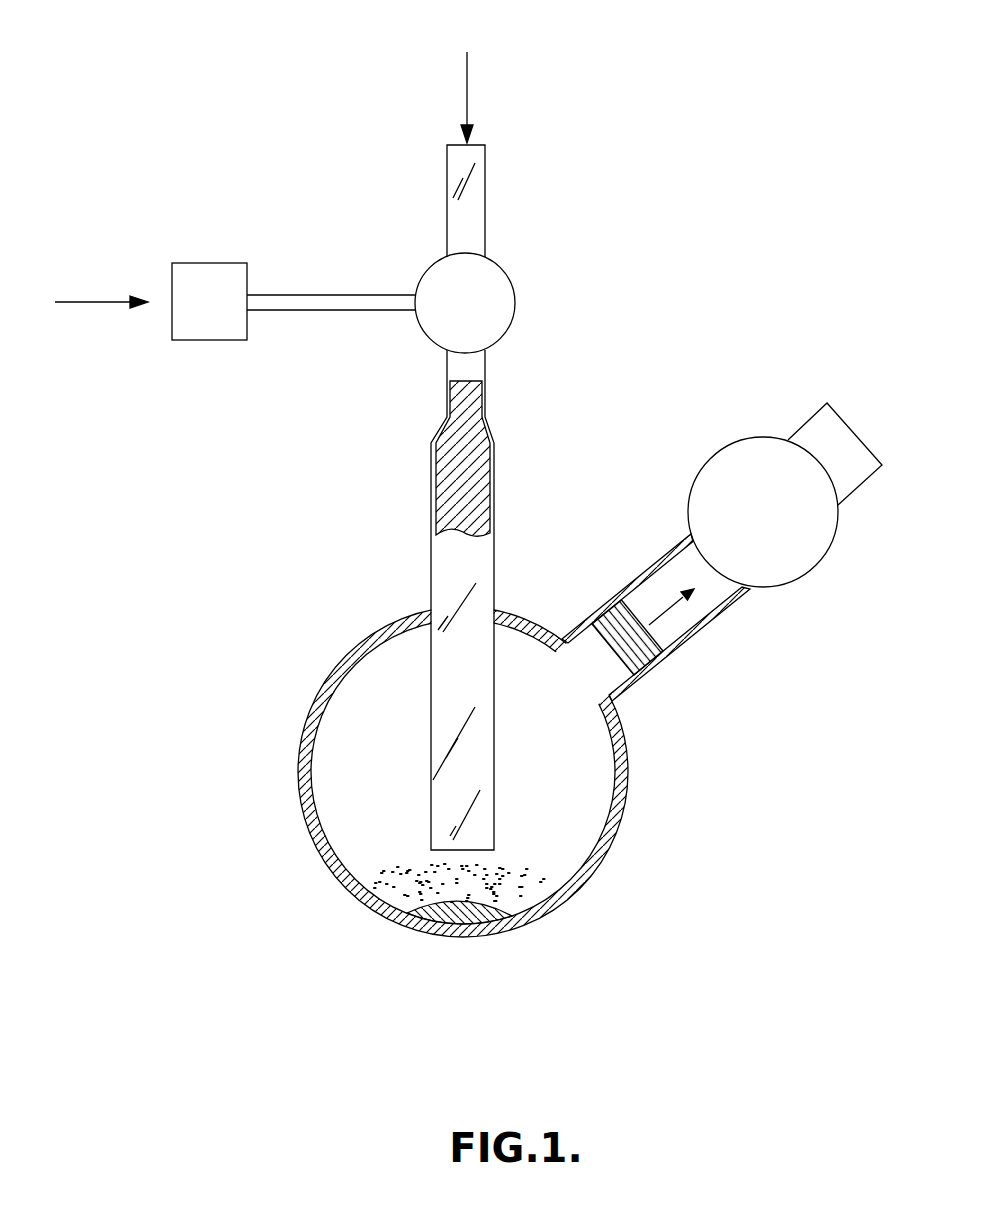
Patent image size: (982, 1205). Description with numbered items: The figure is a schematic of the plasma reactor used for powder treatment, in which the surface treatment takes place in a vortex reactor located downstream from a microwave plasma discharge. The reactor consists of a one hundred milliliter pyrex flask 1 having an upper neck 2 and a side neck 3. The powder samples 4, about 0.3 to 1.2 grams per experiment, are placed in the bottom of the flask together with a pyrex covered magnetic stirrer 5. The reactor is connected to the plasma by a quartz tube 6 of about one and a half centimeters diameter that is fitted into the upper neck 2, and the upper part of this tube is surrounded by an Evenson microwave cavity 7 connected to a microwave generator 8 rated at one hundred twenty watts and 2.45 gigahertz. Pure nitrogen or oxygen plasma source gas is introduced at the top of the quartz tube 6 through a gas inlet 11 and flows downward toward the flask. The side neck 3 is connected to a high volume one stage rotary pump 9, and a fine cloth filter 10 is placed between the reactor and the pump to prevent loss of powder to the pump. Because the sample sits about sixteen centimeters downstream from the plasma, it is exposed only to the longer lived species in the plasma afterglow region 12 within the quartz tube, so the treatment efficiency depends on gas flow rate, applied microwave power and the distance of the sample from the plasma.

The pyrex flask 1 is at (316, 693).
The upper neck 2 is at (431, 563).
The side neck 3 is at (692, 640).
The powder samples 4 is at (395, 900).
The pyrex covered magnetic stirrer 5 is at (488, 933).
The quartz tube 6 is at (485, 185).
The Evenson microwave cavity 7 is at (513, 298).
The microwave generator 8 is at (203, 340).
The rotary pump 9 is at (815, 548).
The fine cloth filter 10 is at (645, 659).
The gas inlet 11 is at (462, 78).
The plasma afterglow region 12 is at (465, 490).